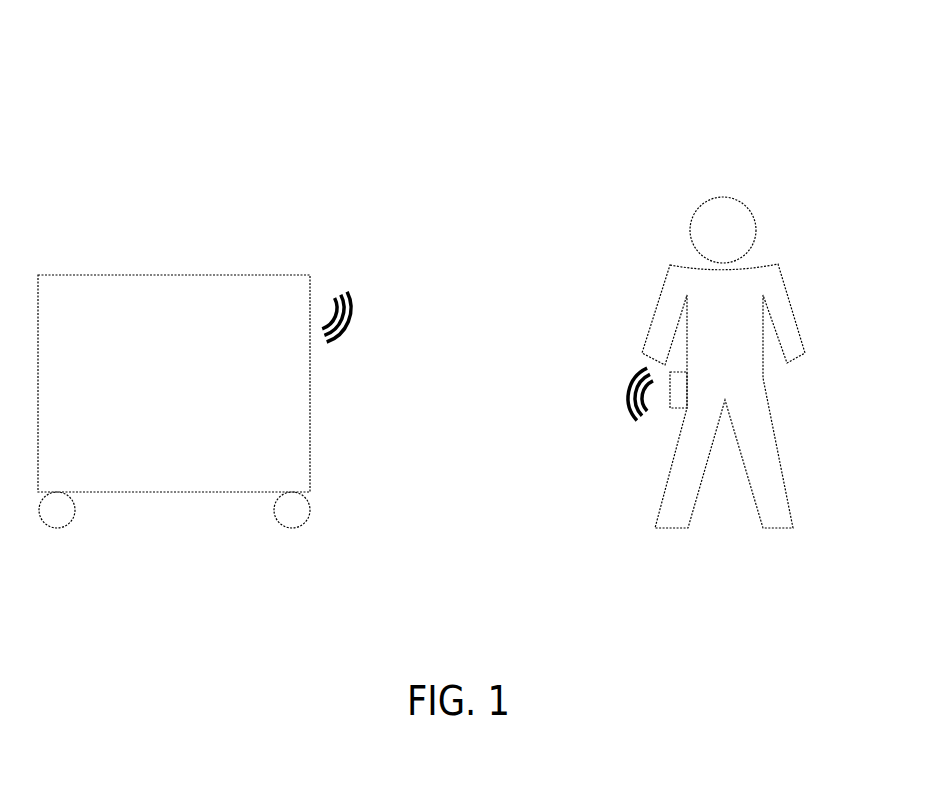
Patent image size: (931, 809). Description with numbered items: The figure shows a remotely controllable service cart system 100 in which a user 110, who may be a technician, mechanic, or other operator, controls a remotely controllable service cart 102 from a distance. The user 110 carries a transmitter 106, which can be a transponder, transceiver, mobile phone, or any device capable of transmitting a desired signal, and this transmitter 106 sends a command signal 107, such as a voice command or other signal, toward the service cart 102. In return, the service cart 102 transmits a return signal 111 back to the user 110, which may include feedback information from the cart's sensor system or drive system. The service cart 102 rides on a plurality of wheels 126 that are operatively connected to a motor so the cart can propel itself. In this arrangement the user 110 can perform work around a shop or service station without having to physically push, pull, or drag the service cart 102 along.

The remotely controllable service cart system 100 is at (400, 108).
The remotely controllable service cart 102 is at (114, 275).
The transmitter 106 is at (679, 372).
The command signal 107 is at (627, 423).
The user 110 is at (785, 285).
The return signal 111 is at (355, 331).
The wheels 126 is at (273, 512).